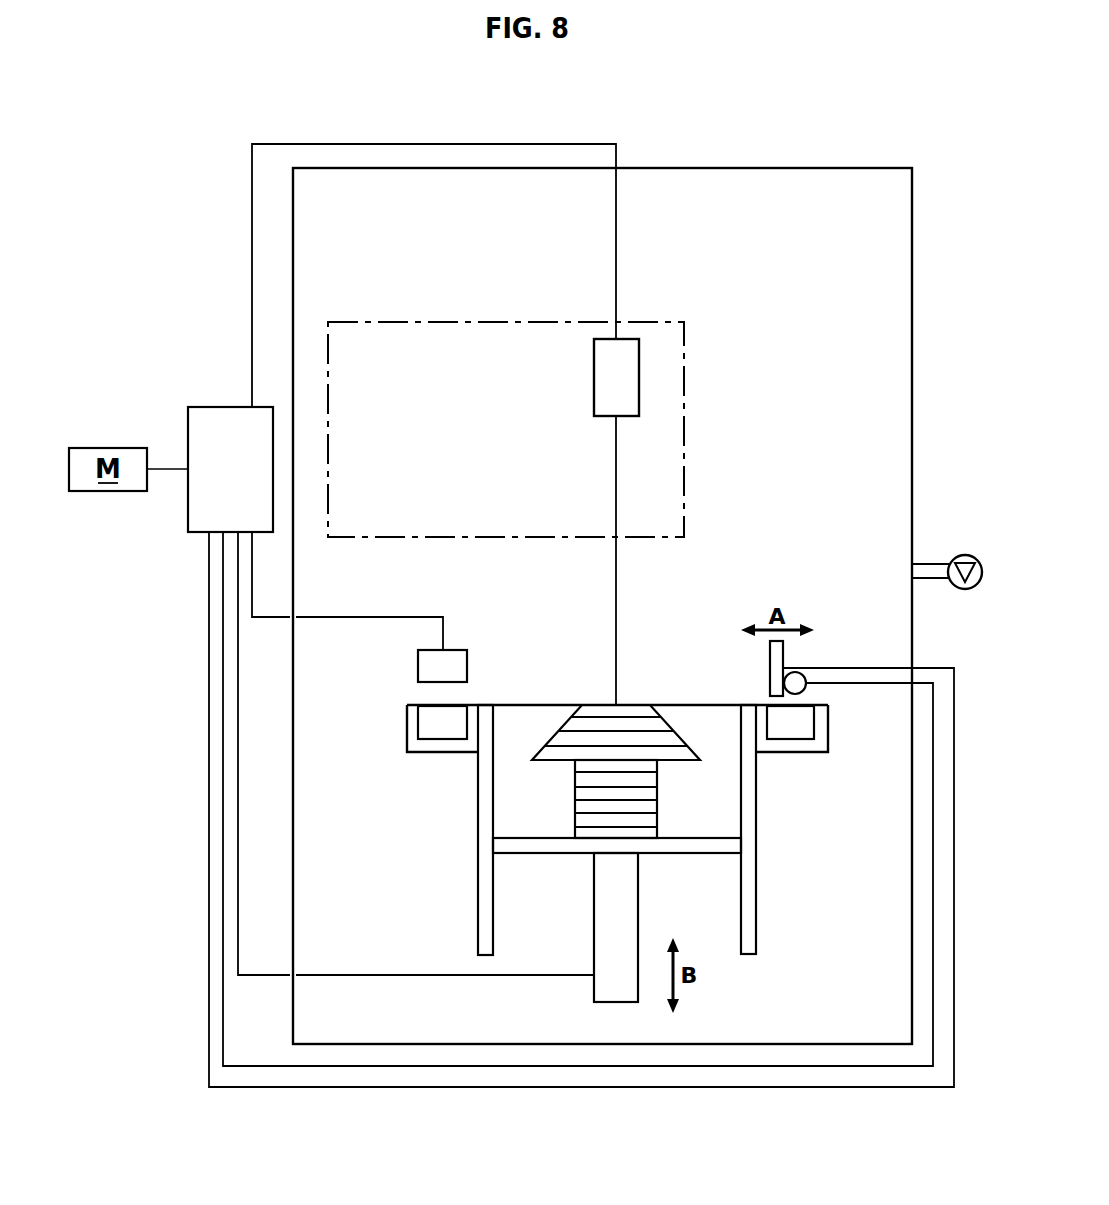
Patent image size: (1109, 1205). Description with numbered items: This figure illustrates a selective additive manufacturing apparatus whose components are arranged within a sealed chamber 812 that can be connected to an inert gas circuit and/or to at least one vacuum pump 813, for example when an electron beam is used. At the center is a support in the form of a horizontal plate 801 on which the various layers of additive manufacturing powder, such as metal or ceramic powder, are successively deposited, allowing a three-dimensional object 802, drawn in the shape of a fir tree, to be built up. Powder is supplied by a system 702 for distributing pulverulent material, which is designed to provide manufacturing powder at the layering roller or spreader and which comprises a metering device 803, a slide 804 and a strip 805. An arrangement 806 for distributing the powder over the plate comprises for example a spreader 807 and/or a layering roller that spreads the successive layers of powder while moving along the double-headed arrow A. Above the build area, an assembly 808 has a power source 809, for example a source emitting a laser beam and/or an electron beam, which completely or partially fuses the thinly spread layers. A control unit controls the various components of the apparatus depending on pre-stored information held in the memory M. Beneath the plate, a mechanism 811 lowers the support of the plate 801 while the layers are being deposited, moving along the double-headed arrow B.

The system for distributing pulverulent material 702 is at (370, 710).
The horizontal plate 801 is at (686, 846).
The object 802 is at (633, 698).
The metering device 803 is at (425, 679).
The slide 804 is at (443, 753).
The strip 805 is at (425, 735).
The arrangement for distributing powder 806 is at (826, 644).
The spreader 807 is at (770, 665).
The assembly having a power source 808 is at (505, 321).
The power source 809 is at (599, 390).
The mechanism for lowering the support 811 is at (599, 935).
The sealed chamber 812 is at (913, 523).
The vacuum pump 813 is at (961, 590).